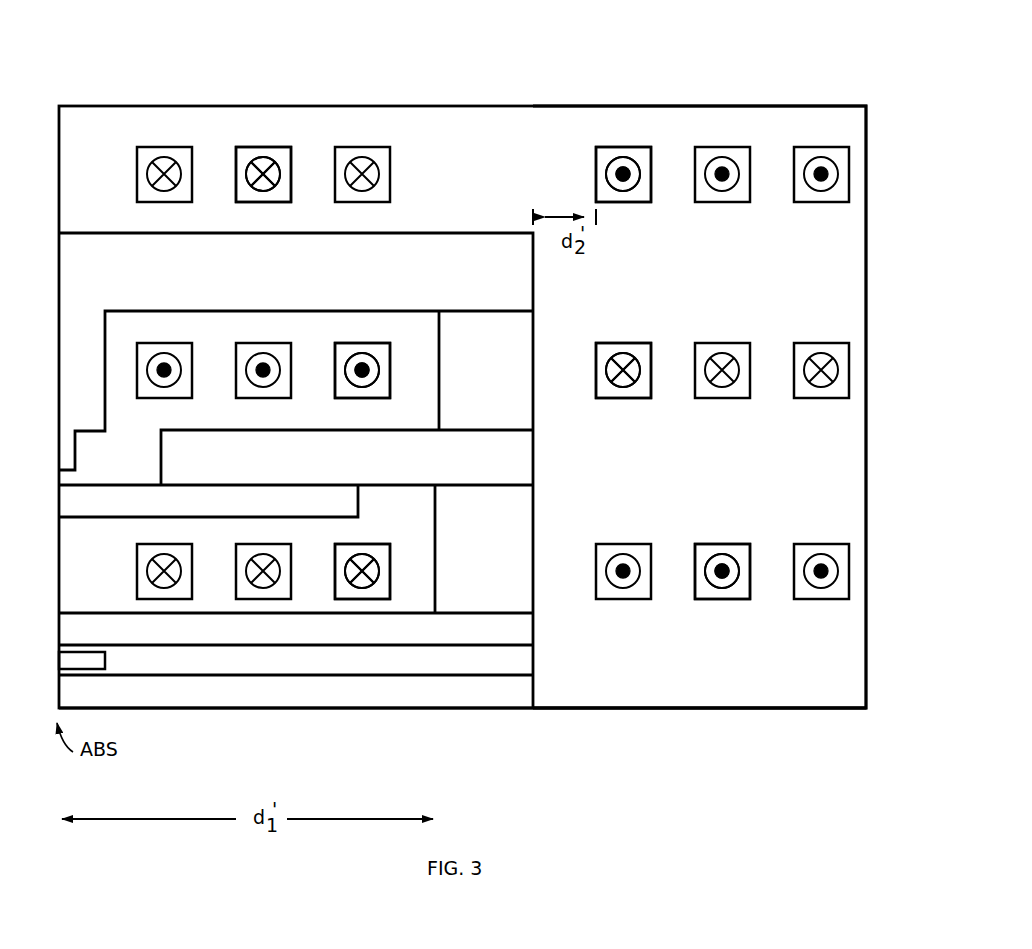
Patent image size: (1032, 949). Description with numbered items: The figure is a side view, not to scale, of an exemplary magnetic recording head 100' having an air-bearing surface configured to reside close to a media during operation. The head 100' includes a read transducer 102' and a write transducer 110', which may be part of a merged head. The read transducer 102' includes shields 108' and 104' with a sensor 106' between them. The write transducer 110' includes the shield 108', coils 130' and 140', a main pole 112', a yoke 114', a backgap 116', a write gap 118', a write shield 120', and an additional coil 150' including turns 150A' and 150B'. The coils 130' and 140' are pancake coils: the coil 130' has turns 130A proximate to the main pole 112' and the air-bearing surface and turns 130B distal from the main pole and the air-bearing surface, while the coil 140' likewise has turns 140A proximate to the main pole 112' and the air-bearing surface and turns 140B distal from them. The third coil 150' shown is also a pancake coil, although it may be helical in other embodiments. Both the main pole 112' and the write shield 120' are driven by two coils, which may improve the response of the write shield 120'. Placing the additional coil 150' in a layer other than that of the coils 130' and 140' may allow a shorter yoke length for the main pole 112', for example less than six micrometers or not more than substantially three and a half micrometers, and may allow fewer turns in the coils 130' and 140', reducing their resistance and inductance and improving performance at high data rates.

The magnetic recording head 100' is at (462, 354).
The read transducer 102' is at (699, 712).
The shield 104' is at (308, 713).
The sensor 106' is at (114, 717).
The shield 108' is at (296, 682).
The write transducer 110' is at (699, 370).
The main pole 112' is at (296, 619).
The yoke 114' is at (385, 459).
The backgap 116' is at (527, 370).
The write gap 118' is at (296, 263).
The write shield 120' is at (296, 393).
The coil 130' is at (542, 595).
The turns 130A is at (387, 530).
The turns 130B is at (715, 518).
The coil 140' is at (497, 341).
The turns 140A is at (374, 410).
The turns 140B is at (684, 413).
The additional coil 150' is at (445, 124).
The turns 150A' is at (263, 140).
The turns 150B' is at (692, 140).